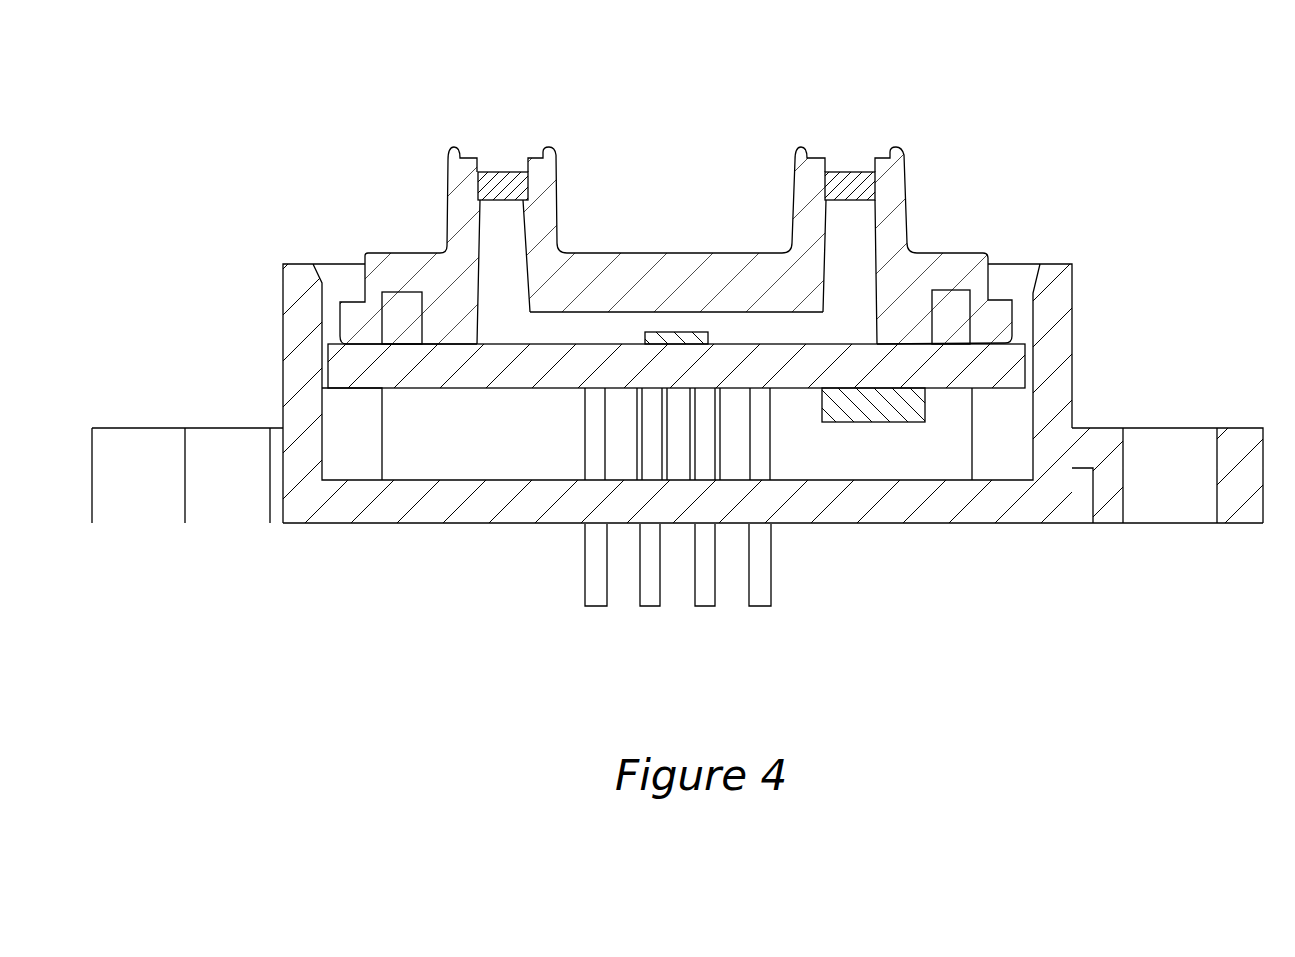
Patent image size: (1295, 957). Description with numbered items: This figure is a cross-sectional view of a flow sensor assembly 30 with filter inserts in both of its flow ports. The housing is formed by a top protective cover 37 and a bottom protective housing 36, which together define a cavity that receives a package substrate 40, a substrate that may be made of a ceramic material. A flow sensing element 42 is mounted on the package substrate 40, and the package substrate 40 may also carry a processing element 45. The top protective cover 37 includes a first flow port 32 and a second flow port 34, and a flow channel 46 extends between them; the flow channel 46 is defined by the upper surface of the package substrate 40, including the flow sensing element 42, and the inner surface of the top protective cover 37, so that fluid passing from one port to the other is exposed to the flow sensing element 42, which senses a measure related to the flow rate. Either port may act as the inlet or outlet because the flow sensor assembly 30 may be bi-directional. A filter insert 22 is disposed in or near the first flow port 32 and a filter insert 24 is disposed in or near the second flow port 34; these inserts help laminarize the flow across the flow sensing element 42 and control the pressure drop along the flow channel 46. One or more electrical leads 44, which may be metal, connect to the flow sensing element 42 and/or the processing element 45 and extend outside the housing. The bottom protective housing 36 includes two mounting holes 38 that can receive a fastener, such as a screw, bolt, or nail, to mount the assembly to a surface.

The flow sensor assembly 30 is at (1068, 62).
The filter insert 22 is at (503, 172).
The filter insert 24 is at (850, 172).
The first flow port 32 is at (552, 188).
The second flow port 34 is at (897, 188).
The bottom protective housing 36 is at (1060, 337).
The top protective cover 37 is at (668, 260).
The mounting holes 38 is at (220, 440).
The package substrate 40 is at (947, 363).
The flow sensing element 42 is at (657, 330).
The electrical leads 44 is at (703, 590).
The processing element 45 is at (872, 417).
The flow channel 46 is at (784, 330).